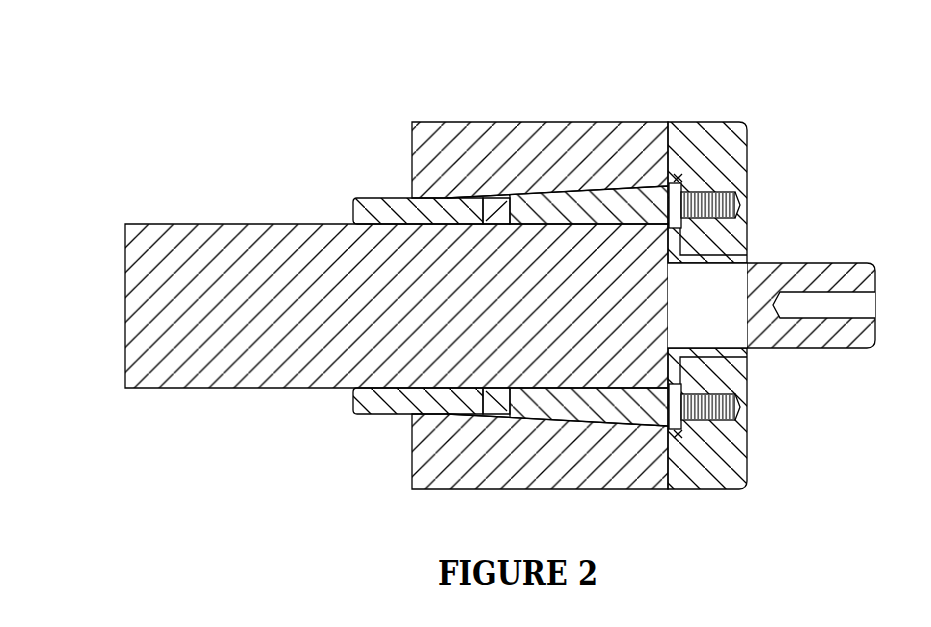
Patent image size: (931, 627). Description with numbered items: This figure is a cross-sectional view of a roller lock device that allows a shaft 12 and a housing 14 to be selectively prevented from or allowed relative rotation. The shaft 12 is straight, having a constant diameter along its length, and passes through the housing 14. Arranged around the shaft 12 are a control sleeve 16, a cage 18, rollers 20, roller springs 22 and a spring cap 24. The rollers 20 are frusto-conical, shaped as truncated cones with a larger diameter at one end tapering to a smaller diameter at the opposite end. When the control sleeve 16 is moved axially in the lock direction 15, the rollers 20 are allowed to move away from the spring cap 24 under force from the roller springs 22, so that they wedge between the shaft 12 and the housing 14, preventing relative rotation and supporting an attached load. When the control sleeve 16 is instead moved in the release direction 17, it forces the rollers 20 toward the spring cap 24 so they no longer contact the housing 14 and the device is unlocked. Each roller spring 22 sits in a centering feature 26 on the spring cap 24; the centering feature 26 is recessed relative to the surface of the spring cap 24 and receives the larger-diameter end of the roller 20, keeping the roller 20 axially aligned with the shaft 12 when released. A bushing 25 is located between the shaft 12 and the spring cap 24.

The shaft 12 is at (125, 333).
The housing 14 is at (470, 122).
The lock direction 15 is at (143, 210).
The control sleeve 16 is at (383, 197).
The release direction 17 is at (277, 400).
The cage 18 is at (505, 194).
The rollers 20 is at (592, 190).
The roller springs 22 is at (707, 190).
The spring cap 24 is at (747, 446).
The bushing 25 is at (708, 355).
The centering feature 26 is at (678, 178).